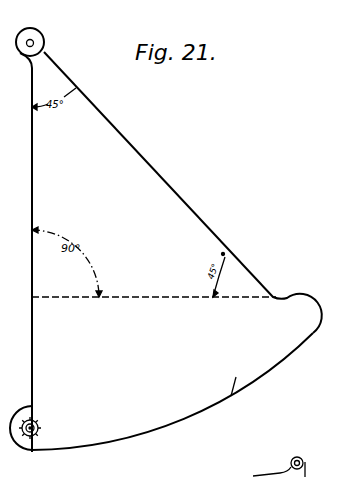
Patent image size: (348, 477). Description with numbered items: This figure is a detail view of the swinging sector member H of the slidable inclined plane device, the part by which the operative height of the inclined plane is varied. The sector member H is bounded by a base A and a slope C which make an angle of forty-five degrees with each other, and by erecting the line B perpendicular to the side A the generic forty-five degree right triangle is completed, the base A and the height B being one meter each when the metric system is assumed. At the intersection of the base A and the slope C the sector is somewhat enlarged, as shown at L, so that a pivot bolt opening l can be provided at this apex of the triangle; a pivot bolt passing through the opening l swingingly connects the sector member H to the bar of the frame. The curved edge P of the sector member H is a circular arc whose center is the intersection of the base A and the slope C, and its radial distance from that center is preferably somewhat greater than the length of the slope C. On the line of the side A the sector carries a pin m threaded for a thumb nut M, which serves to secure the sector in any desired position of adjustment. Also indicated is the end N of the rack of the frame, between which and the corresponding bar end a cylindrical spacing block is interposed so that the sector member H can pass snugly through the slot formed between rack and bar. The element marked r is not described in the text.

The enlarged sector section L is at (47, 43).
The pivot bolt opening l is at (27, 47).
The base A is at (38, 183).
The slope C is at (176, 191).
The line perpendicular to the side A B is at (140, 295).
The thumb nut M is at (34, 410).
The pin m is at (37, 424).
The curved edge P is at (163, 423).
The sector member H is at (230, 397).
The end of the rack N is at (304, 458).
The link r is at (256, 470).